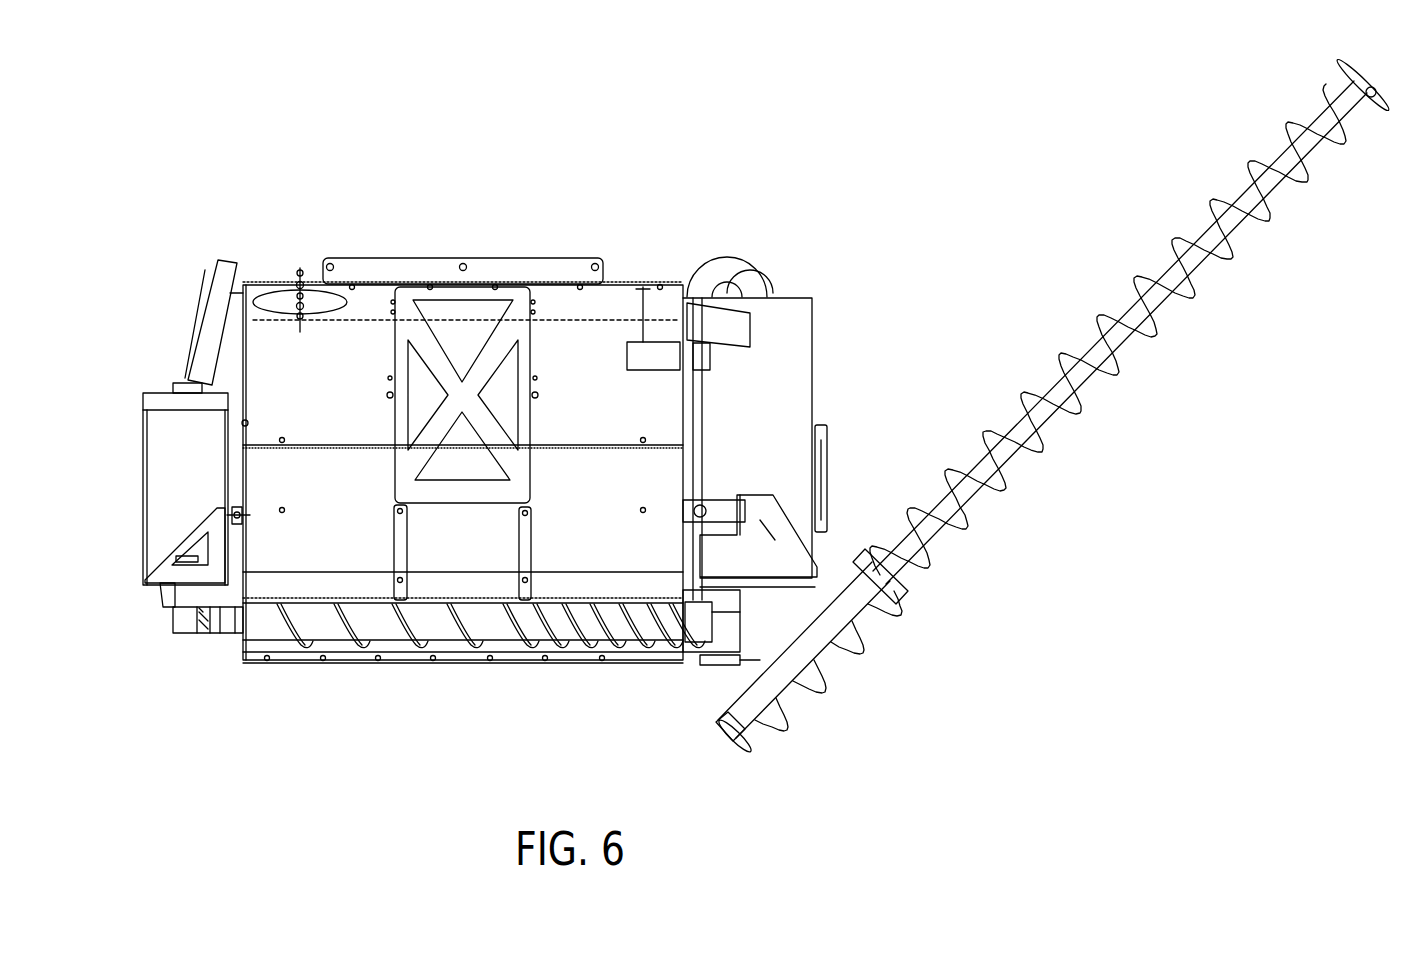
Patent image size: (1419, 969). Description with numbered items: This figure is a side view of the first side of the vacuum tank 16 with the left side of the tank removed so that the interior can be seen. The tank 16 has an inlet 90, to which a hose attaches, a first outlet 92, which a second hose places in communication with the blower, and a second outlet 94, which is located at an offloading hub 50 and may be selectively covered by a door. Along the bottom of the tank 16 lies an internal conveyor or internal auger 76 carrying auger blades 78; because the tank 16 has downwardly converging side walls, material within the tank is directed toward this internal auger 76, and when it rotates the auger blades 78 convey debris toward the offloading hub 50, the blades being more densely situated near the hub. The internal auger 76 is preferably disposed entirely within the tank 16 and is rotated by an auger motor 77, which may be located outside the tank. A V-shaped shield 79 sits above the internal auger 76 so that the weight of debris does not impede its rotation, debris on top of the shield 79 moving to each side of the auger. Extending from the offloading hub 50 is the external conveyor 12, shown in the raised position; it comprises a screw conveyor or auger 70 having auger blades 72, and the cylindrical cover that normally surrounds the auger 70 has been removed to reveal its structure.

The external conveyor 12 is at (1054, 405).
The tank 16 is at (448, 242).
The offloading hub 50 is at (648, 652).
The auger 70 is at (1120, 332).
The auger blades 72 is at (1050, 407).
The internal auger 76 is at (463, 671).
The auger motor 77 is at (178, 640).
The auger blades 78 is at (491, 660).
The V-shaped shield 79 is at (430, 644).
The inlet 90 is at (577, 285).
The first outlet 92 is at (673, 275).
The second outlet 94 is at (680, 698).